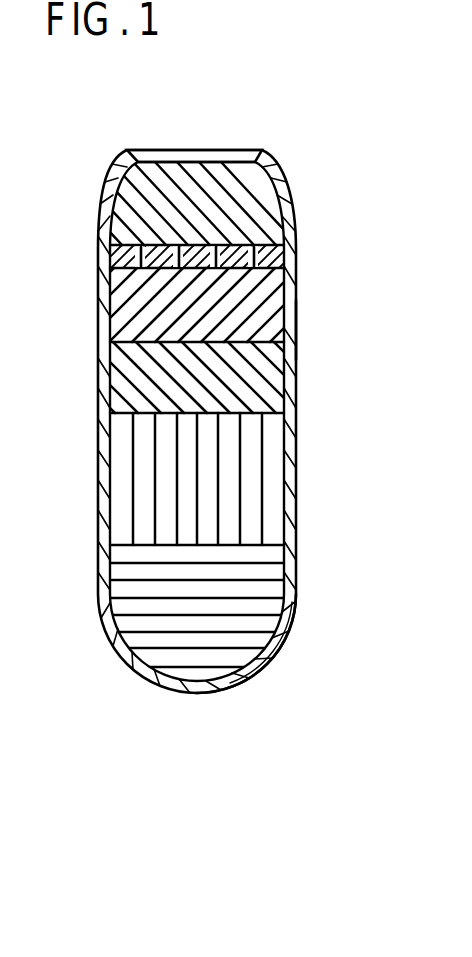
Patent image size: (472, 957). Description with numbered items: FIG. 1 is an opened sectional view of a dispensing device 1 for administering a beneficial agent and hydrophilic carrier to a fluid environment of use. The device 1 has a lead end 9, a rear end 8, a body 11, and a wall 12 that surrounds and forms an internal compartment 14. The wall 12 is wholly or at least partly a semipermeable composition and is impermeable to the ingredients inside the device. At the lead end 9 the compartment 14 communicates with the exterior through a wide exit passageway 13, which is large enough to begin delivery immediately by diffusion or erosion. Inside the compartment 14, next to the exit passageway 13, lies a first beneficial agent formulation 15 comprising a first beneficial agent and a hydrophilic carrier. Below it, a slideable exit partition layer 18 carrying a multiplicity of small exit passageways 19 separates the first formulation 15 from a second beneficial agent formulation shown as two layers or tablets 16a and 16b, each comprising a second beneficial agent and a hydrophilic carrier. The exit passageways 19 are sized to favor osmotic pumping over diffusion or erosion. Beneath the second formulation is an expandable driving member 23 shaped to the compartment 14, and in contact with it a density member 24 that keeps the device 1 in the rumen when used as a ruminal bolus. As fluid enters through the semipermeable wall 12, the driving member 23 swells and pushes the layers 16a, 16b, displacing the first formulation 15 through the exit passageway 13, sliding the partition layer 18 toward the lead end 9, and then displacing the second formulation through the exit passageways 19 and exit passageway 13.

The device 1 is at (209, 389).
The rear end 8 is at (245, 688).
The lead end 9 is at (278, 192).
The body 11 is at (296, 333).
The wall 12 is at (296, 382).
The exit passageway 13 is at (233, 153).
The internal compartment 14 is at (238, 484).
The first beneficial agent formulation 15 is at (253, 213).
The agent formulation layer 16a is at (134, 303).
The agent formulation layer 16b is at (120, 374).
The exit partition layer 18 is at (168, 220).
The exit passageways 19 is at (137, 247).
The expandable driving member 23 is at (250, 520).
The density member 24 is at (258, 592).